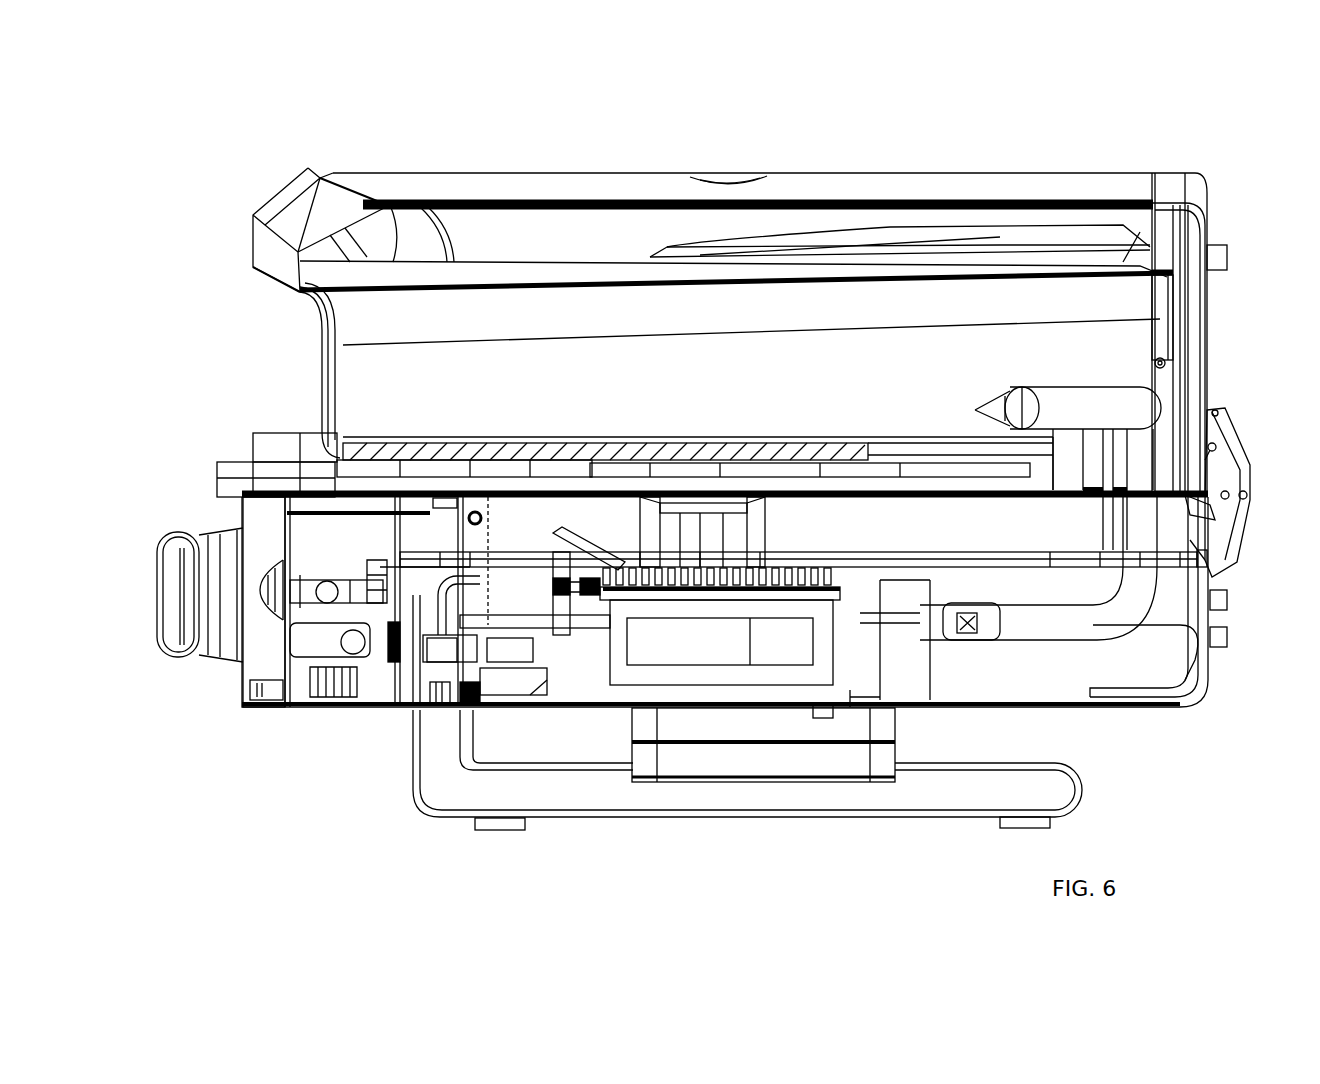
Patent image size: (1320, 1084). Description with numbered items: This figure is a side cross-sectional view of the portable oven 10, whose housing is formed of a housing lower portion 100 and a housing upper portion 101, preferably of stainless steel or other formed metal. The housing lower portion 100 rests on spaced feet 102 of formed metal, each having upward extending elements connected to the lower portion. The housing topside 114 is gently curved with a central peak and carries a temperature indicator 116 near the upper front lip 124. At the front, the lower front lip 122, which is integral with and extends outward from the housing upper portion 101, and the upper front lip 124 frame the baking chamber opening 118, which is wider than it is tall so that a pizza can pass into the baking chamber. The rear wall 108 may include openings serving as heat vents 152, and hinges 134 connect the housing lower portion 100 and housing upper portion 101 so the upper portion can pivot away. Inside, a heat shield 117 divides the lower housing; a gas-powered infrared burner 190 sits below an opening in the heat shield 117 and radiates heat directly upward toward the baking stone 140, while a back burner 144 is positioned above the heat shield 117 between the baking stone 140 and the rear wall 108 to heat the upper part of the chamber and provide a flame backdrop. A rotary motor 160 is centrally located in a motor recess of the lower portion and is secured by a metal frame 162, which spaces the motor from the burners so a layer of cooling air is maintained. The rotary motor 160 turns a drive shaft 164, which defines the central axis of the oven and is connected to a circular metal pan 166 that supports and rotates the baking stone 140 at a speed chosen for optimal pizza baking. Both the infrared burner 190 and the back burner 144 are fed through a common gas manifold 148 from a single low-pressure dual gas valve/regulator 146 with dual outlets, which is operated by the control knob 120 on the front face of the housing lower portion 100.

The portable oven 10 is at (1250, 128).
The housing lower portion 100 is at (1195, 696).
The housing upper portion 101 is at (1207, 190).
The foot 102 is at (1085, 793).
The rear wall 108 is at (1195, 322).
The housing topside 114 is at (640, 172).
The temperature indicator 116 is at (290, 170).
The heat shield 117 is at (905, 548).
The baking chamber opening 118 is at (355, 372).
The control knob 120 is at (155, 628).
The lower front lip 122 is at (215, 460).
The upper front lip 124 is at (252, 272).
The hinge 134 is at (1238, 440).
The baking stone 140 is at (455, 440).
The back burner 144 is at (1045, 387).
The dual gas valve/regulator 146 is at (235, 665).
The common gas manifold 148 is at (1190, 640).
The heat vent 152 is at (1227, 255).
The rotary motor 160 is at (780, 765).
The metal frame 162 is at (640, 524).
The drive shaft 164 is at (720, 535).
The circular metal pan 166 is at (355, 455).
The infrared burner 190 is at (718, 650).